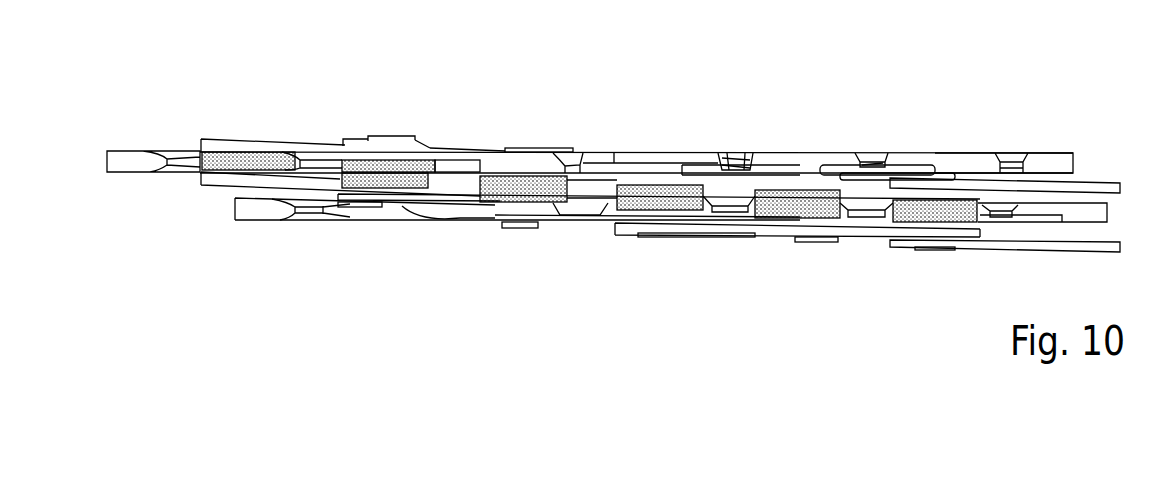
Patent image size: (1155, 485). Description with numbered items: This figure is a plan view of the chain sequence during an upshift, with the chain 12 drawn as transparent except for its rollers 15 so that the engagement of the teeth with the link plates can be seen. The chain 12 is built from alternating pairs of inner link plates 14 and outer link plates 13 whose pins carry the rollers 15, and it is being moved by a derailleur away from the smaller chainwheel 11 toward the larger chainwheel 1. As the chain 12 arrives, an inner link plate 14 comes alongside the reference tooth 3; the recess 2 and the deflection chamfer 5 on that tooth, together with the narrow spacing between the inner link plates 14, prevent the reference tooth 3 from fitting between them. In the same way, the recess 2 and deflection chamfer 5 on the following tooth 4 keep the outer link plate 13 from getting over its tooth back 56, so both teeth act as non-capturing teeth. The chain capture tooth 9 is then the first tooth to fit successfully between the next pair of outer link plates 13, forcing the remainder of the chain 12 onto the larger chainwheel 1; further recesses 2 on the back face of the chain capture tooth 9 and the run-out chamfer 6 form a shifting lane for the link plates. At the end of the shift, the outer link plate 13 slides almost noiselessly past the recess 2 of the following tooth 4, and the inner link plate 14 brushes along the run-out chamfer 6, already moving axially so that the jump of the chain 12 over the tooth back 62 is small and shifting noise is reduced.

The larger chainwheel 1 is at (142, 155).
The recess 2 is at (318, 152).
The reference tooth 3 is at (860, 155).
The following tooth 4 is at (722, 155).
The deflection chamfer 5 is at (743, 155).
The run-out chamfer 6 is at (568, 170).
The chain capture tooth 9 is at (451, 160).
The smaller chainwheel 11 is at (260, 207).
The chain 12 is at (967, 252).
The outer link plate 13 is at (380, 143).
The inner link plate 14 is at (597, 178).
The roller 15 is at (933, 208).
The tooth back 56 is at (745, 155).
The tooth back 62 is at (460, 163).